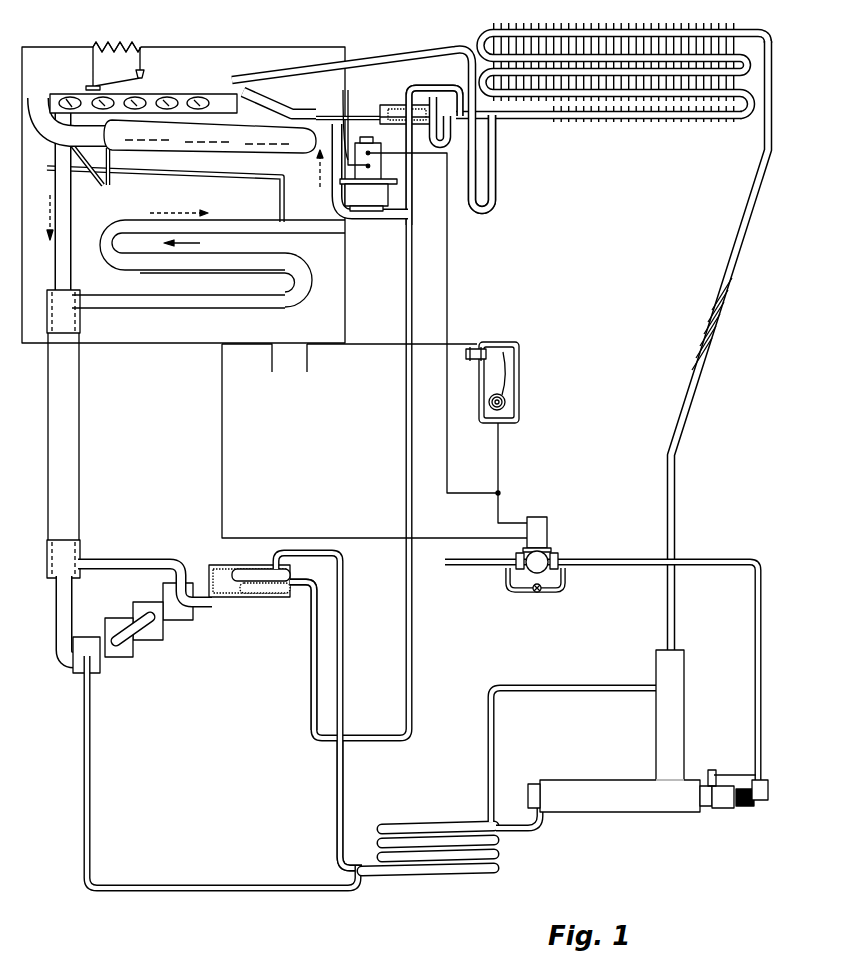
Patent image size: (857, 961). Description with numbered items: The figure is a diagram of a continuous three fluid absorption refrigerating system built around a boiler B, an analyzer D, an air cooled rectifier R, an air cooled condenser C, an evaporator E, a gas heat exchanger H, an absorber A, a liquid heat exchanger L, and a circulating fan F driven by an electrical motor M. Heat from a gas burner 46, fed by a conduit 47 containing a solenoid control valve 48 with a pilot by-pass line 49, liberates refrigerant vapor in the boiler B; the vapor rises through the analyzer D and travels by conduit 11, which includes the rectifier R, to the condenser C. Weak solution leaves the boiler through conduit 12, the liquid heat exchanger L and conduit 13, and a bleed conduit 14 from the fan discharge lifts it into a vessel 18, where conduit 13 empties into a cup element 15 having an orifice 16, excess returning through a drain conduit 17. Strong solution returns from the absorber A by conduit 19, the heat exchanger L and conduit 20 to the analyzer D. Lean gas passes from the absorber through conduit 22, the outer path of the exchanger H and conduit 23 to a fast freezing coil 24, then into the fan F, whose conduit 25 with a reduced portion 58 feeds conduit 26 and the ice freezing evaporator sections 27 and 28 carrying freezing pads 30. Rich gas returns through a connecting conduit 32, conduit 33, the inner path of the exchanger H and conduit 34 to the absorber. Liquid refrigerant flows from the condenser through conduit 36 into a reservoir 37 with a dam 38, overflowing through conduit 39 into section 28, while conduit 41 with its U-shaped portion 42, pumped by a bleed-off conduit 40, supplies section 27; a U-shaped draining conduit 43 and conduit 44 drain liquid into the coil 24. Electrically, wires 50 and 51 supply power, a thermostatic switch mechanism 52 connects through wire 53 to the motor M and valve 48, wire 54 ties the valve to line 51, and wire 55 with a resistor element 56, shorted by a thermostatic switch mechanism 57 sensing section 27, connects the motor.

The conduit 11 is at (675, 492).
The conduit 12 is at (528, 826).
The conduit 13 is at (341, 775).
The bleed conduit 14 is at (412, 640).
The cup element 15 is at (236, 577).
The orifice 16 is at (238, 594).
The drain conduit 17 is at (310, 697).
The vessel 18 is at (215, 564).
The conduit 19 is at (89, 808).
The conduit 20 is at (493, 738).
The conduit 22 is at (122, 560).
The conduit 23 is at (130, 304).
The fast freezing coil 24 is at (204, 263).
The conduit 25 is at (323, 182).
The conduit 26 is at (270, 93).
The ice freezing evaporator section 27 is at (168, 92).
The ice freezing evaporator section 28 is at (228, 137).
The freezing pads 30 is at (72, 99).
The connecting conduit 32 is at (67, 128).
The conduit 33 is at (64, 266).
The conduit 34 is at (58, 638).
The conduit 36 is at (520, 118).
The reservoir 37 is at (443, 110).
The dam 38 is at (400, 123).
The conduit 39 is at (343, 92).
The bleed-off conduit 40 is at (412, 176).
The conduit 41 is at (432, 50).
The U-shaped portion 42 is at (497, 196).
The U-shaped liquid draining conduit 43 is at (99, 185).
The conduit 44 is at (187, 177).
The gas burner 46 is at (724, 800).
The conduit 47 is at (580, 560).
The solenoid control valve 48 is at (540, 530).
The by-pass line 49 is at (548, 590).
The wire 50 is at (308, 365).
The wire 51 is at (271, 363).
The thermostatic switch mechanism 52 is at (519, 374).
The wire 53 is at (500, 468).
The wire 54 is at (223, 462).
The wire 55 is at (213, 46).
The resistor element 56 is at (122, 45).
The thermostatic switch mechanism 57 is at (133, 80).
The reduced portion 58 is at (318, 157).
The absorber A is at (150, 630).
The boiler B is at (620, 793).
The condenser C is at (630, 113).
The analyzer D is at (668, 710).
The evaporator E is at (127, 211).
The circulating fan F is at (380, 199).
The gas heat exchanger H is at (65, 378).
The liquid heat exchanger L is at (420, 827).
The electrical motor M is at (368, 150).
The rectifier R is at (703, 352).